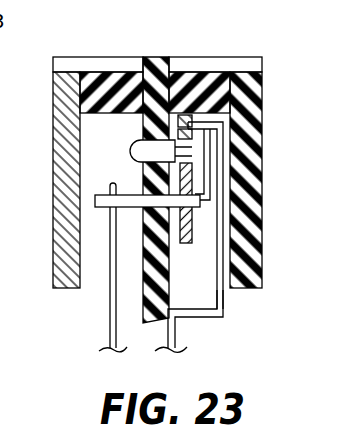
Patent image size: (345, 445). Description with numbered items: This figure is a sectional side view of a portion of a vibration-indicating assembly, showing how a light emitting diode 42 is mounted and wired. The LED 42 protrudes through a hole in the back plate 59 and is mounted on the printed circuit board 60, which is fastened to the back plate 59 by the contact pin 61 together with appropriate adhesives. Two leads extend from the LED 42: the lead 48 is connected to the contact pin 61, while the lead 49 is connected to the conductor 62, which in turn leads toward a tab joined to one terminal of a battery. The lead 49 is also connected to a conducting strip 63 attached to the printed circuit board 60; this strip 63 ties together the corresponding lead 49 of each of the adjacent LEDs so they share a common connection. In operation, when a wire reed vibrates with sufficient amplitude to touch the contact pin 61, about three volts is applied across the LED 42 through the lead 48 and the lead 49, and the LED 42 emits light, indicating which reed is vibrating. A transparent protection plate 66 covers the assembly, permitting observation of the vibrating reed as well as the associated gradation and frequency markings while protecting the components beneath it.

The light emitting diode 42 is at (130, 150).
The lead 48 is at (200, 188).
The lead 49 is at (192, 138).
The back plate 59 is at (169, 294).
The printed circuit board 60 is at (186, 218).
The contact pin 61 is at (110, 206).
The conductor 62 is at (223, 168).
The conducting strip 63 is at (193, 103).
The protection plate 66 is at (53, 108).